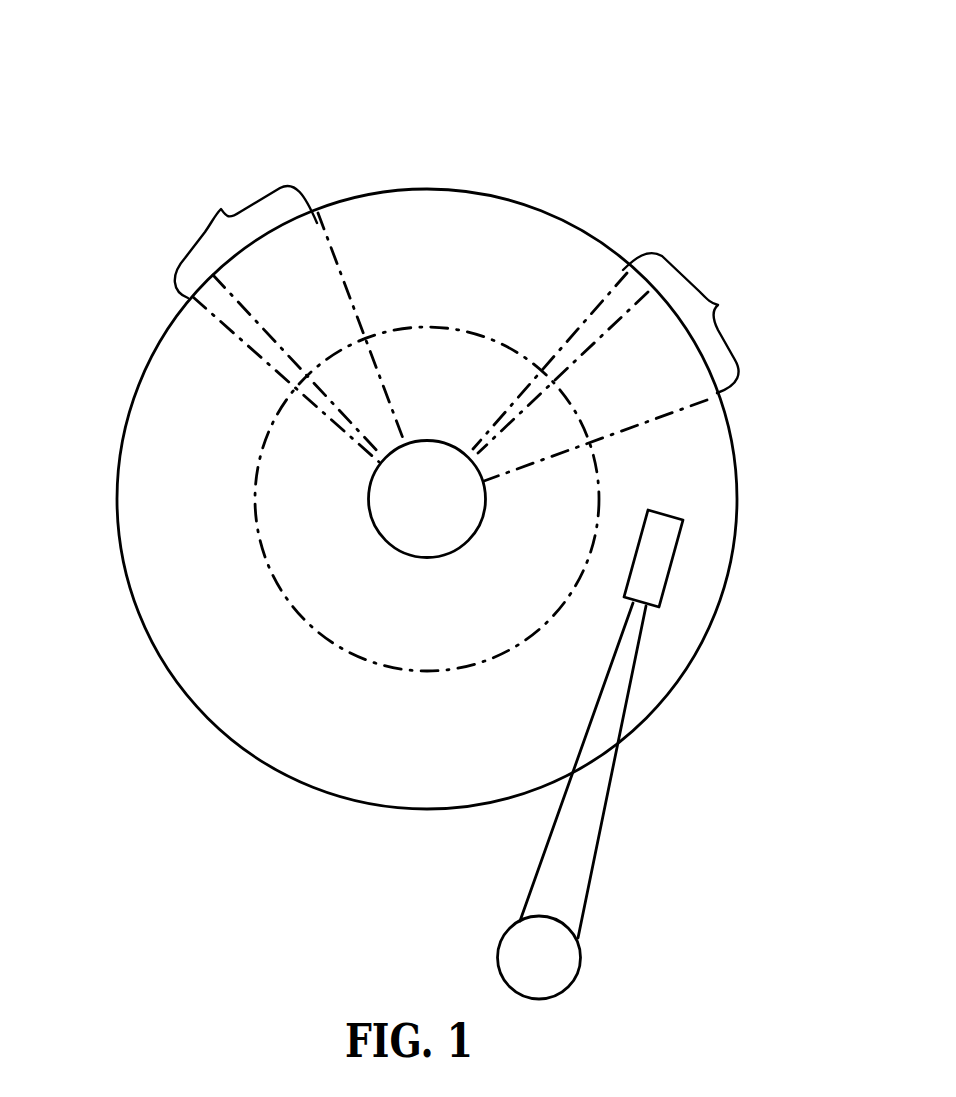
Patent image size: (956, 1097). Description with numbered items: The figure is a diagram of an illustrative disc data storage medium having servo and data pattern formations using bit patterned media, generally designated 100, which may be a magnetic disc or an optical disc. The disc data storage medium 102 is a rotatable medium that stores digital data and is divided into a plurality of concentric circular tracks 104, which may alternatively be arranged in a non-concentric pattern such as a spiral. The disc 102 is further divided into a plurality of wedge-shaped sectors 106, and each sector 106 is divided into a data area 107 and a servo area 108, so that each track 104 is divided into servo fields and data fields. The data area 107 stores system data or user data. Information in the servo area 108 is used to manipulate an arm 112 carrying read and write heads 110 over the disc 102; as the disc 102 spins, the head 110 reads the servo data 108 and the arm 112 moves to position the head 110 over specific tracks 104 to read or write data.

The disc data storage medium having servo and data pattern formations using bit patt 100 is at (350, 74).
The disc data storage medium 102 is at (167, 417).
The concentric circular tracks 104 is at (288, 612).
The wedge-shaped sectors 106 is at (465, 286).
The data area 107 is at (310, 265).
The servo area 108 is at (222, 303).
The read and write heads 110 is at (658, 537).
The arm 112 is at (570, 862).